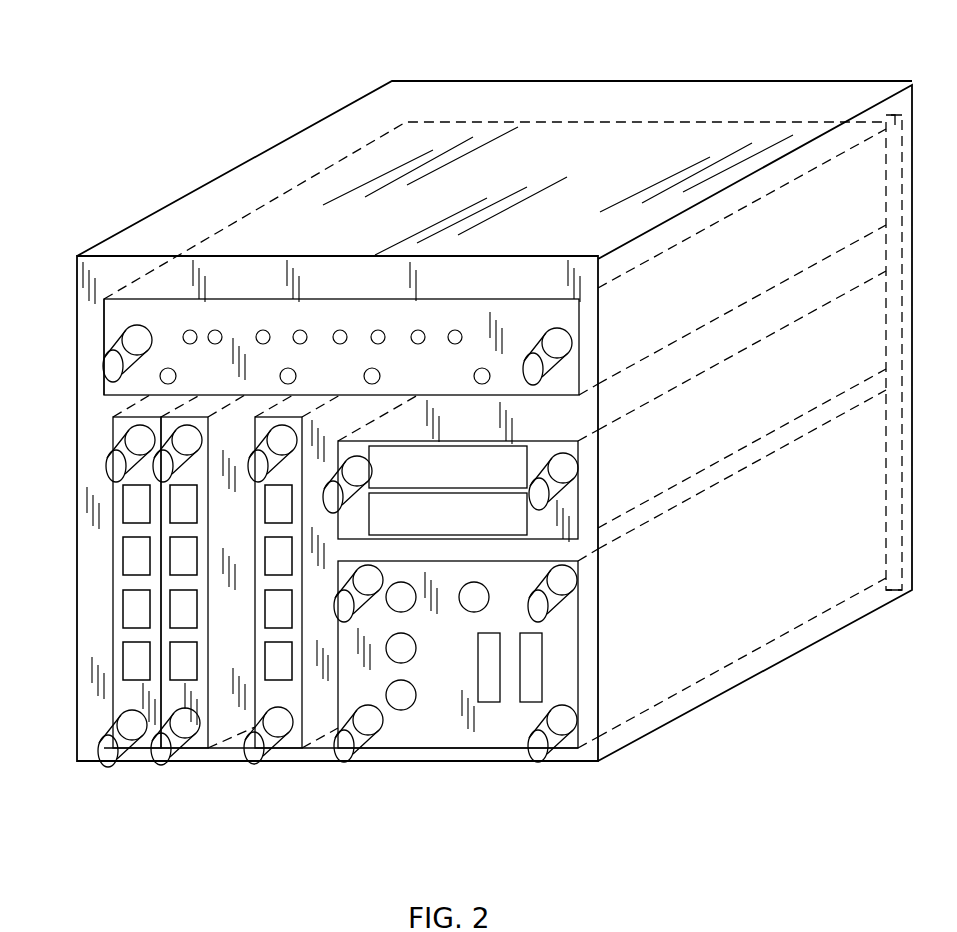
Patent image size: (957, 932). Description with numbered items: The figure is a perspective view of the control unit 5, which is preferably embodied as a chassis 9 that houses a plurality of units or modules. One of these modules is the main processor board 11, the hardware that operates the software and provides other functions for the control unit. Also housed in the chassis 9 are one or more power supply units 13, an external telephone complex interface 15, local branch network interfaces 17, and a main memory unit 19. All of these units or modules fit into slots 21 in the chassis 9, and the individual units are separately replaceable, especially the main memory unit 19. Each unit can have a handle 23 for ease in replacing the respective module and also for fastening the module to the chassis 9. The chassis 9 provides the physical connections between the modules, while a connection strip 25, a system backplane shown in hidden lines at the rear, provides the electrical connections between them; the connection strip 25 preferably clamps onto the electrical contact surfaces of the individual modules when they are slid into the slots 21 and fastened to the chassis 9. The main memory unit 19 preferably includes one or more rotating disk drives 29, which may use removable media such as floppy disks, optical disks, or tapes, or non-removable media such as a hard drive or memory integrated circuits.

The control unit 5 is at (298, 118).
The chassis 9 is at (196, 190).
The main processor board 11 is at (118, 325).
The power supply unit 13 is at (418, 733).
The external telephone complex interface 15 is at (303, 748).
The local branch network interfaces 17 is at (207, 748).
The main memory unit 19 is at (536, 456).
The slots 21 is at (100, 392).
The handle 23 is at (112, 368).
The connection strip 25 is at (895, 112).
The rotating disk drives 29 is at (395, 462).